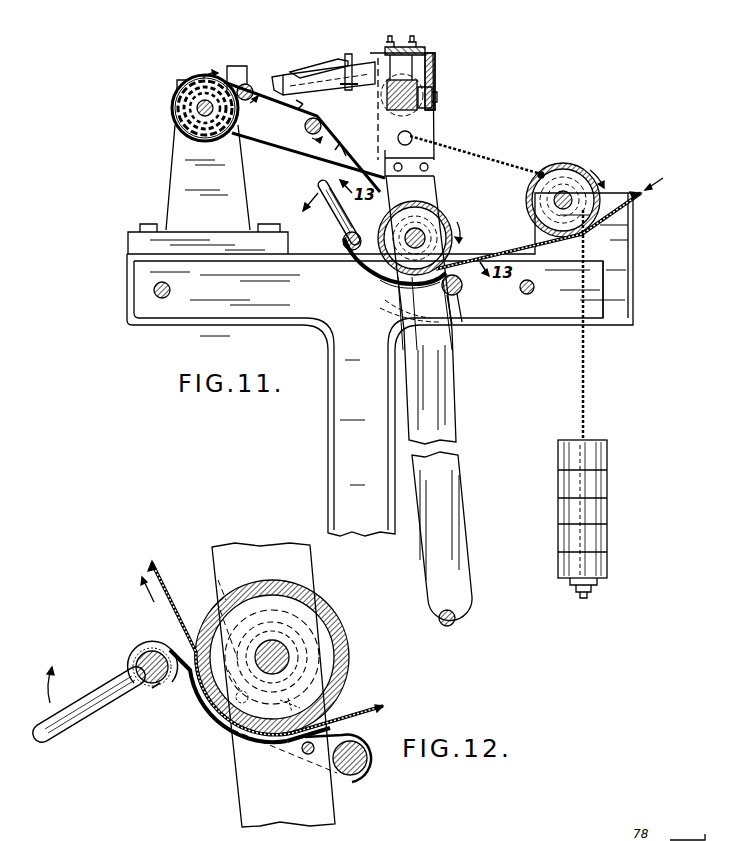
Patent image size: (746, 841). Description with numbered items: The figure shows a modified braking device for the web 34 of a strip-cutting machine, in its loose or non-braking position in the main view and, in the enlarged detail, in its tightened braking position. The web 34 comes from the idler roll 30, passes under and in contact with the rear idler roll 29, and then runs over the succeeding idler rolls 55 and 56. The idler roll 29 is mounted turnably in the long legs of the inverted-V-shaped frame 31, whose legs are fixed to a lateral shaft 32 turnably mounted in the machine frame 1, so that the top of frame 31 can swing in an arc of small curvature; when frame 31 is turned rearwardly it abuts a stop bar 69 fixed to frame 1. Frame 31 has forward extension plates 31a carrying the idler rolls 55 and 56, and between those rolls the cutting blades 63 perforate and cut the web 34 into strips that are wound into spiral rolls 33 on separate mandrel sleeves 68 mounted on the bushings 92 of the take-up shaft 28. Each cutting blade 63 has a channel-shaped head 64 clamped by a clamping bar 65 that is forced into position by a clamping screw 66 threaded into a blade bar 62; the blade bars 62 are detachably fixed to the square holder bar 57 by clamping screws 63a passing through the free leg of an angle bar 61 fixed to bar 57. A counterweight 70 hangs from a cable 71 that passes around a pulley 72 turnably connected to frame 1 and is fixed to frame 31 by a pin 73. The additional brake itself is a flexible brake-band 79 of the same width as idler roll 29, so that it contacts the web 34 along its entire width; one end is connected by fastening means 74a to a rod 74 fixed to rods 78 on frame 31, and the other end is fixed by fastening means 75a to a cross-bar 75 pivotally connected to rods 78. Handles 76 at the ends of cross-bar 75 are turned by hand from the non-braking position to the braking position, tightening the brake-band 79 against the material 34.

In FIG. 11, the frame 1 is at (126, 311).
In FIG. 11, the take-up shaft 28 is at (190, 90).
In FIG. 11, the idler roll 29 is at (451, 220).
In FIG. 12, the idler roll 29 is at (343, 633).
In FIG. 11, the idler roll 30 is at (575, 167).
In FIG. 11, the frame 31 is at (434, 127).
In FIG. 12, the frame 31 is at (305, 562).
In FIG. 11, the forward extension plates 31a is at (290, 152).
In FIG. 11, the lateral shaft 32 is at (456, 617).
In FIG. 11, the spiral rolls 33 is at (176, 127).
In FIG. 11, the web 34 is at (644, 197).
In FIG. 12, the web 34 is at (150, 565).
In FIG. 11, the idler roll 55 is at (306, 134).
In FIG. 11, the idler roll 56 is at (246, 84).
In FIG. 11, the square bar 57 is at (421, 87).
In FIG. 11, the angle bar 61 is at (437, 54).
In FIG. 11, the blade bar 62 is at (346, 86).
In FIG. 11, the cutting blade 63 is at (280, 111).
In FIG. 11, the clamping screw 63a is at (398, 44).
In FIG. 11, the channel-shaped head 64 is at (286, 74).
In FIG. 11, the clamping bar 65 is at (305, 63).
In FIG. 11, the clamping screw 66 is at (348, 55).
In FIG. 11, the mandrel sleeve 68 is at (204, 78).
In FIG. 11, the stop bar 69 is at (534, 285).
In FIG. 11, the counterweight 70 is at (609, 446).
In FIG. 11, the cable 71 is at (498, 155).
In FIG. 11, the pulley 72 is at (542, 172).
In FIG. 11, the pin 73 is at (397, 138).
In FIG. 11, the rod 74 is at (453, 296).
In FIG. 12, the rod 74 is at (330, 770).
In FIG. 11, the fastening means 74a is at (463, 287).
In FIG. 12, the fastening means 74a is at (353, 778).
In FIG. 11, the cross-bar 75 is at (350, 252).
In FIG. 12, the cross-bar 75 is at (136, 662).
In FIG. 12, the fastening means 75a is at (157, 687).
In FIG. 11, the handle 76 is at (334, 208).
In FIG. 12, the handle 76 is at (50, 738).
In FIG. 11, the rod 78 is at (372, 262).
In FIG. 12, the rod 78 is at (195, 718).
In FIG. 11, the brake-band 79 is at (396, 278).
In FIG. 12, the brake-band 79 is at (232, 728).
In FIG. 11, the bushing 92 is at (178, 103).